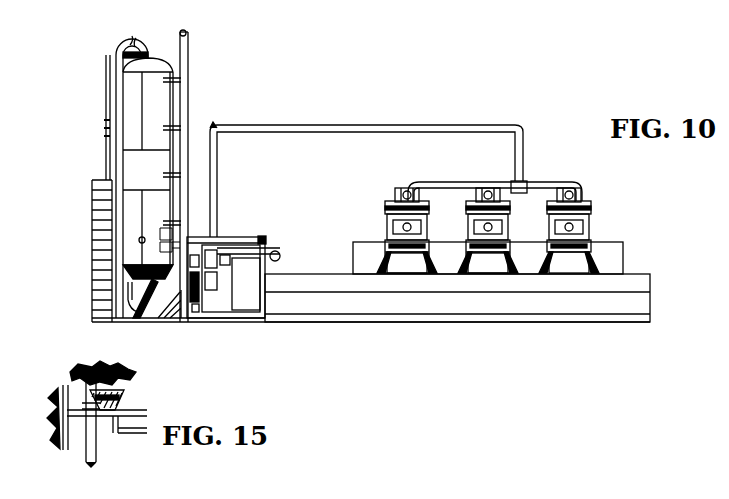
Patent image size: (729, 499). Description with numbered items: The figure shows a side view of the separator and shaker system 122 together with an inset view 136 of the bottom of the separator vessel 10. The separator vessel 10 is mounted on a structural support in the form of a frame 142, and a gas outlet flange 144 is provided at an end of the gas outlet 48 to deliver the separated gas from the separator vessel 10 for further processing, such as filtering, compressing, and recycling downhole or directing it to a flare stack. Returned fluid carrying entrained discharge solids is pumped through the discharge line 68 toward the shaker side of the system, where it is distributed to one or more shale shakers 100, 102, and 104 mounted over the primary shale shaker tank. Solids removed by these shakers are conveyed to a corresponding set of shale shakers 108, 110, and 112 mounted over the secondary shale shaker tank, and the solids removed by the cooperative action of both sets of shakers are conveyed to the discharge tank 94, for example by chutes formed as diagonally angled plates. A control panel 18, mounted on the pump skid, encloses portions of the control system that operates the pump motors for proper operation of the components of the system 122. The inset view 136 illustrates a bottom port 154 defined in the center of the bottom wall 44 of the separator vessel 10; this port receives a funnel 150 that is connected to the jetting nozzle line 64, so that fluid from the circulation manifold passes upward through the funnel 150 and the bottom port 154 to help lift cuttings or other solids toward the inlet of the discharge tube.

In FIG. 10, the separator vessel 10 is at (130, 93).
In FIG. 10, the control panel 18 is at (258, 314).
In FIG. 10, the gas outlet 48 is at (116, 50).
In FIG. 10, the discharge line 68 is at (276, 125).
In FIG. 10, the discharge tank 94 is at (651, 303).
In FIG. 10, the shale shaker 100 is at (385, 206).
In FIG. 10, the shale shaker 102 is at (466, 208).
In FIG. 10, the shale shaker 104 is at (548, 212).
In FIG. 10, the shale shaker 108 is at (392, 254).
In FIG. 10, the shale shaker 110 is at (470, 254).
In FIG. 10, the shale shaker 112 is at (548, 248).
In FIG. 10, the system 122 is at (372, 98).
In FIG. 10, the frame 142 is at (188, 42).
In FIG. 10, the gas outlet flange 144 is at (100, 316).
In FIG. 15, the bottom wall 44 is at (130, 378).
In FIG. 15, the jetting nozzle line 64 is at (113, 433).
In FIG. 15, the inset view 136 is at (233, 379).
In FIG. 15, the funnel 150 is at (115, 402).
In FIG. 15, the bottom port 154 is at (95, 392).